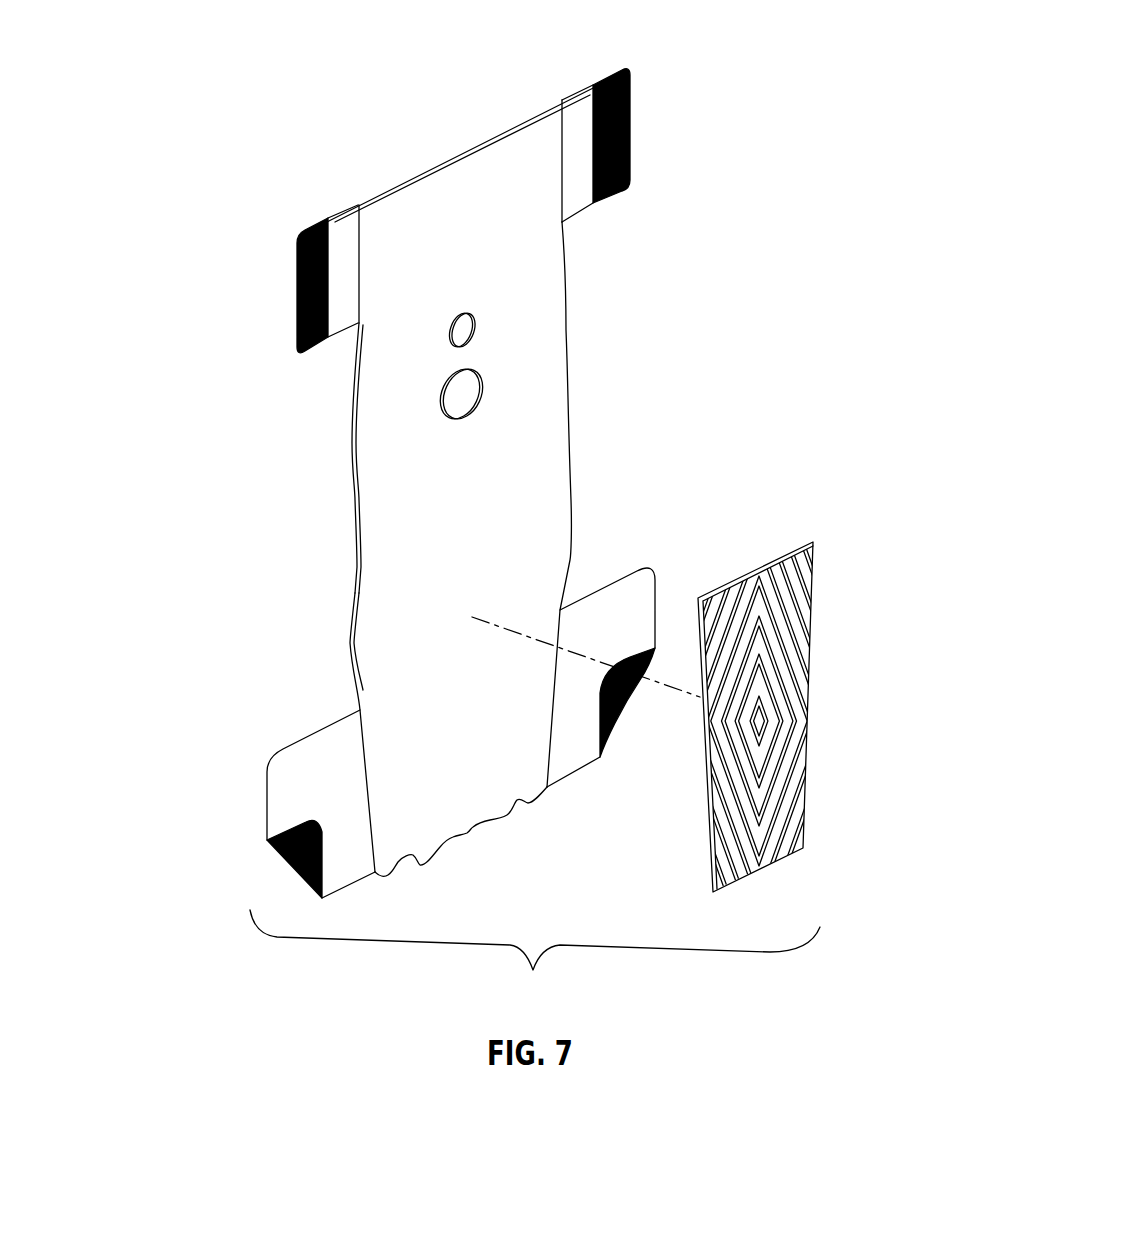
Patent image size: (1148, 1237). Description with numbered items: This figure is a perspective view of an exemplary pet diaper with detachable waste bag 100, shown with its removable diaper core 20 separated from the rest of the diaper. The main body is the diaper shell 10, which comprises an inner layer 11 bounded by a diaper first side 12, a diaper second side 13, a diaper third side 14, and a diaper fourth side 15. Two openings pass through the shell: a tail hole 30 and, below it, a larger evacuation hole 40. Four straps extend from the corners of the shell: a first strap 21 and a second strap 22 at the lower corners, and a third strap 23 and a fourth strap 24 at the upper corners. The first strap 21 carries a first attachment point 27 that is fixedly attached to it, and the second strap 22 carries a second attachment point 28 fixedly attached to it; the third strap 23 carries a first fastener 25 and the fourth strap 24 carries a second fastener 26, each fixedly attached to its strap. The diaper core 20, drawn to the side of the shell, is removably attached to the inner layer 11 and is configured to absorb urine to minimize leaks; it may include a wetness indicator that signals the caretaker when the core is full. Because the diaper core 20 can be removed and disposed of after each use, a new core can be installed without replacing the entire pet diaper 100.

The pet diaper with detachable waste bag 100 is at (207, 42).
The diaper shell 10 is at (482, 160).
The inner layer 11 is at (370, 393).
The diaper first side 12 is at (570, 437).
The diaper second side 13 is at (353, 607).
The diaper third side 14 is at (417, 860).
The diaper fourth side 15 is at (402, 178).
The diaper core 20 is at (808, 570).
The first strap 21 is at (622, 598).
The second strap 22 is at (298, 768).
The third strap 23 is at (568, 115).
The fourth strap 24 is at (333, 230).
The first fastener 25 is at (620, 138).
The second fastener 26 is at (300, 300).
The first attachment point 27 is at (623, 710).
The second attachment point 28 is at (283, 865).
The tail hole 30 is at (472, 327).
The evacuation hole 40 is at (481, 388).